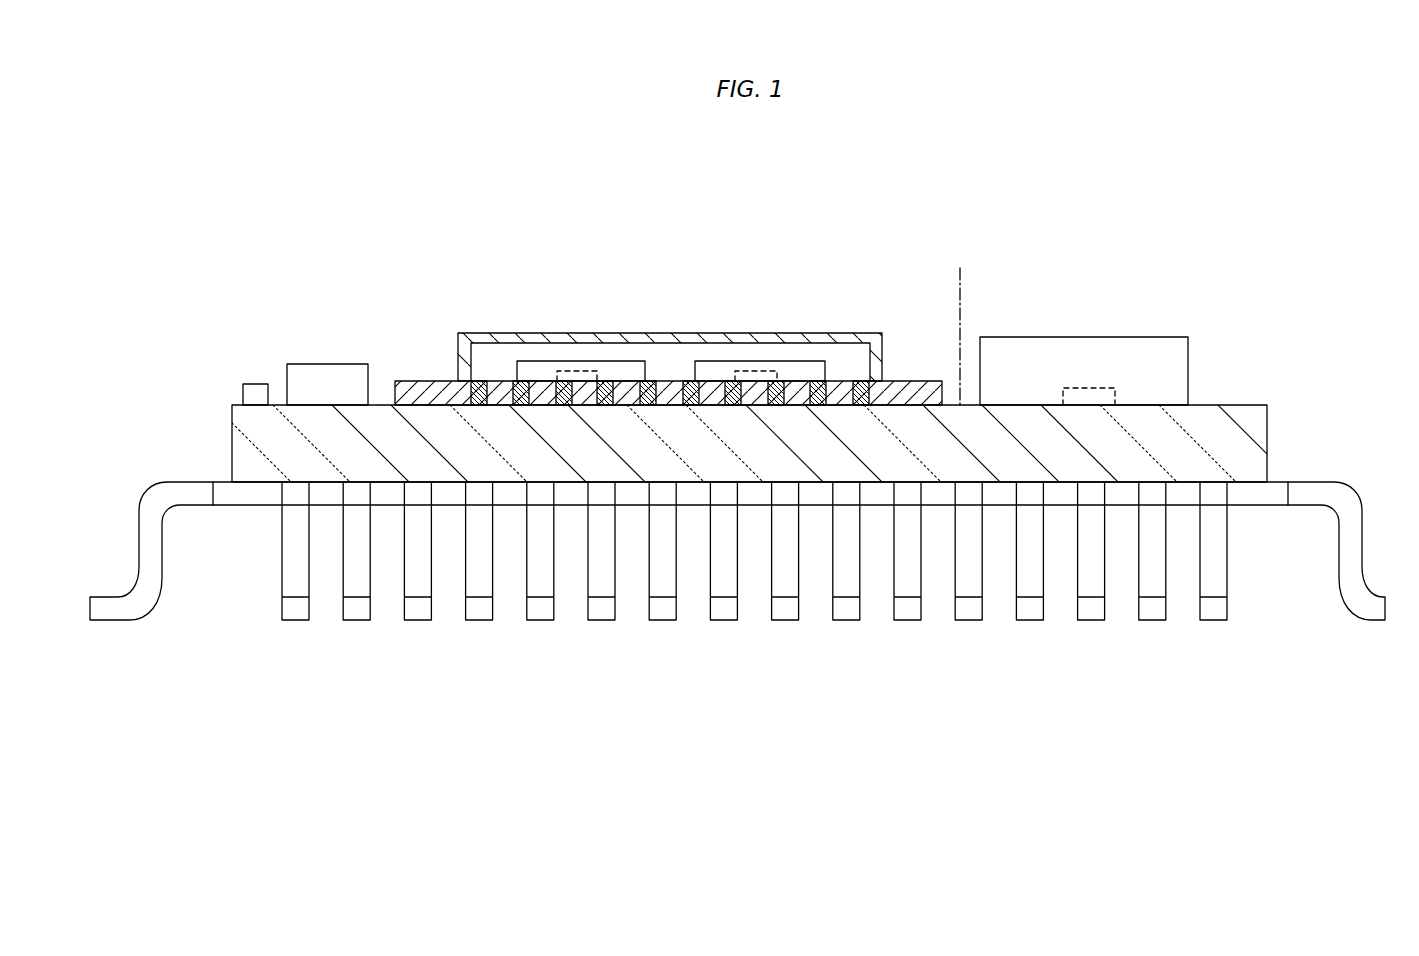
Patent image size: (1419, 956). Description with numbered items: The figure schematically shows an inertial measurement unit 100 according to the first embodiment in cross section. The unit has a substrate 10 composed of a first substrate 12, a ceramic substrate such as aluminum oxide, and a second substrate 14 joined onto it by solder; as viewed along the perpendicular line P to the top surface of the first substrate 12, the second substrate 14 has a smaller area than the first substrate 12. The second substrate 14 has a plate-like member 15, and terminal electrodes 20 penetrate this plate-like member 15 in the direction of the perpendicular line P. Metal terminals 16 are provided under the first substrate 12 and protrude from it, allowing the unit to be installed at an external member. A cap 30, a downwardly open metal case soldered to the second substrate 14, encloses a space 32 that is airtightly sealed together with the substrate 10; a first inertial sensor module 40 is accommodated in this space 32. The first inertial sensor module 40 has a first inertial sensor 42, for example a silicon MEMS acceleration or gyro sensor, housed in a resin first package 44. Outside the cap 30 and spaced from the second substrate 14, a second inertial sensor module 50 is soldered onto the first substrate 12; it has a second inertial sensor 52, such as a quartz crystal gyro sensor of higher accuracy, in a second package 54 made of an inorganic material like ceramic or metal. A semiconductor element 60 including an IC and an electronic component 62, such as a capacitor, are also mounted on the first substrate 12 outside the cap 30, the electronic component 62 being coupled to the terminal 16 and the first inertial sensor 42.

The inertial measurement unit 100 is at (1320, 272).
The substrate 10 is at (219, 390).
The first substrate 12 is at (262, 450).
The second substrate 14 is at (450, 292).
The plate-like member 15 is at (421, 378).
The terminal 16 is at (148, 548).
The terminal electrode 20 is at (518, 361).
The cap 30 is at (671, 340).
The space 32 is at (843, 362).
The first inertial sensor module 40 is at (568, 281).
The first inertial sensor 42 is at (576, 371).
The first package 44 is at (624, 375).
The second inertial sensor module 50 is at (1159, 290).
The second inertial sensor 52 is at (1089, 388).
The second package 54 is at (1151, 372).
The semiconductor element 60 is at (327, 388).
The electronic component 62 is at (253, 393).
The perpendicular line P is at (957, 308).